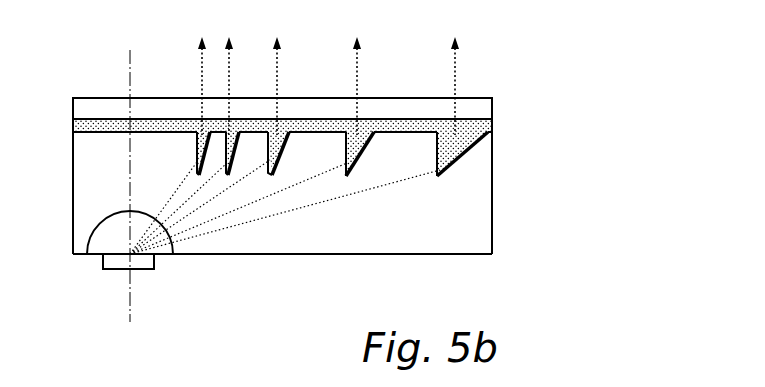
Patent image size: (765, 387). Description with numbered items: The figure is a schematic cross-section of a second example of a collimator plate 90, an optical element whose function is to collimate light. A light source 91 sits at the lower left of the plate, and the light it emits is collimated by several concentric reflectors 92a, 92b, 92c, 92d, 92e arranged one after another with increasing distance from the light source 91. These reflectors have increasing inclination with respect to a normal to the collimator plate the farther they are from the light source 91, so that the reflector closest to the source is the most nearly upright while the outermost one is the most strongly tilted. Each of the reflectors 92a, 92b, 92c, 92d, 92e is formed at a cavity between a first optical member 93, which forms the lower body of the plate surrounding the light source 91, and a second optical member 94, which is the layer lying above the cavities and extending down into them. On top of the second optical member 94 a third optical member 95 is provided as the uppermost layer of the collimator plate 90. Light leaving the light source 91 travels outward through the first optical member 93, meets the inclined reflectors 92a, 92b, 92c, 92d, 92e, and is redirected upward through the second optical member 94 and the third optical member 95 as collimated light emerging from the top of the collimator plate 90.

The collimator plate 90 is at (541, 101).
The light source 91 is at (133, 252).
The concentric reflector 92a is at (207, 140).
The concentric reflector 92b is at (238, 138).
The concentric reflector 92c is at (288, 136).
The concentric reflector 92d is at (371, 139).
The concentric reflector 92e is at (446, 172).
The first optical member 93 is at (492, 190).
The second optical member 94 is at (494, 125).
The third optical member 95 is at (400, 108).